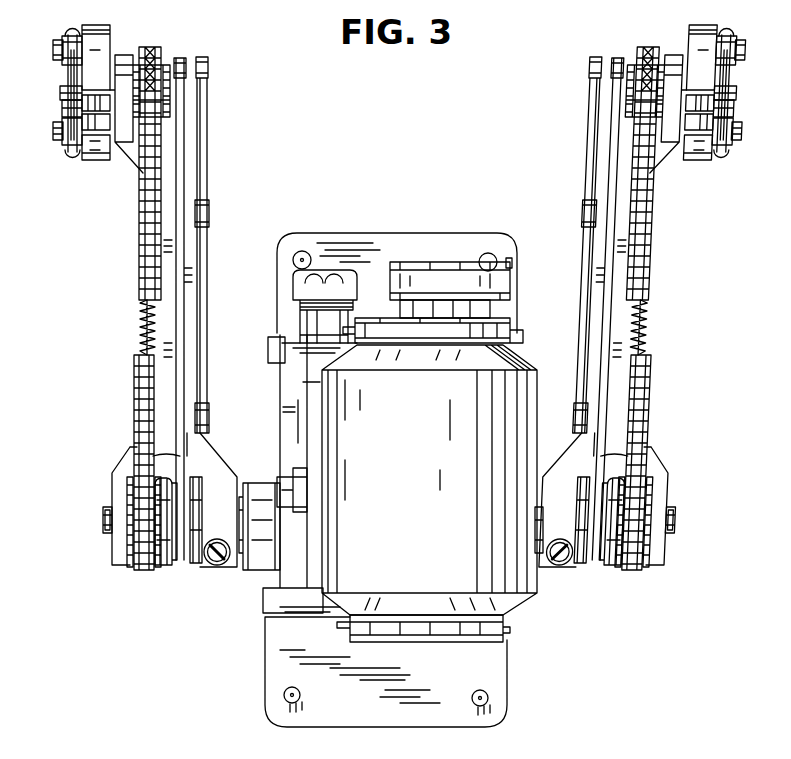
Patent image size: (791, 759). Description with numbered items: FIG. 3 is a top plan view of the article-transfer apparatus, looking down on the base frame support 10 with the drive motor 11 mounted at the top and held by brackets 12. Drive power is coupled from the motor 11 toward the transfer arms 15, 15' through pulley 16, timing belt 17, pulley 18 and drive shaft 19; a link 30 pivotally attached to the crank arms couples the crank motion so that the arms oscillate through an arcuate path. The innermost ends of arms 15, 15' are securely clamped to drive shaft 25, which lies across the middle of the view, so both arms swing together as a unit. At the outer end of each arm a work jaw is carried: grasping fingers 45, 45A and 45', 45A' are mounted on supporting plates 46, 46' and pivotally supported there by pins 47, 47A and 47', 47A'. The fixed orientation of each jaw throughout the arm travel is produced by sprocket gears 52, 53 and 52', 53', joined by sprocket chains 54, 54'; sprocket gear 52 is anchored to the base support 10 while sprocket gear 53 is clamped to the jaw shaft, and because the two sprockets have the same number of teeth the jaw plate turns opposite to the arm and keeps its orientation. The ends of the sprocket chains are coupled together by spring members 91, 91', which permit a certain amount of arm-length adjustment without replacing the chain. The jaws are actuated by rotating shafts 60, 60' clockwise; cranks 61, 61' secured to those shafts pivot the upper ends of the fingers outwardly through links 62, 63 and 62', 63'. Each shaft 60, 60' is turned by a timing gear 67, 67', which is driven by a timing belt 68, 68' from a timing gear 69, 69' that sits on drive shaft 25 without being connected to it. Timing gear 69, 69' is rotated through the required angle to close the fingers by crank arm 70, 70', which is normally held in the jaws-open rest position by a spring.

The base frame support 10 is at (503, 713).
The drive motor 11 is at (513, 400).
The brackets 12 is at (493, 331).
The transfer arm 15 is at (154, 500).
The transfer arm 15' is at (632, 500).
The pulley 16 is at (394, 262).
The timing belt 17 is at (427, 277).
The pulley 18 is at (510, 263).
The drive shaft 19 is at (493, 313).
The drive shaft 25 is at (103, 520).
The link 30 is at (315, 442).
The grasping finger 45 is at (78, 148).
The drive block 45' is at (707, 149).
The grasping finger 45A is at (101, 45).
The upper block 45A' is at (709, 50).
The supporting plate 46 is at (131, 124).
The supporting plate 46' is at (657, 126).
The pin 47 is at (47, 137).
The lower nut 47' is at (744, 155).
The pin 47A is at (44, 50).
The upper nut 47A' is at (753, 55).
The sprocket gear 52 is at (132, 542).
The sprocket 52' is at (643, 550).
The sprocket gear 53 is at (163, 160).
The chain 53' is at (642, 166).
The sprocket chain 54 is at (121, 418).
The sprocket chain 54' is at (661, 462).
The shaft 60 is at (47, 88).
The nut 60' is at (746, 111).
The crank 61 is at (47, 112).
The plate 61' is at (746, 100).
The link 62 is at (53, 164).
The bolt end 62' is at (736, 183).
The link 63 is at (56, 78).
The bolt 63' is at (740, 86).
The timing gear 67 is at (220, 238).
The arm 67' is at (571, 245).
The timing belt 68 is at (205, 309).
The timing belt 68' is at (588, 309).
The timing gear 69 is at (166, 547).
The disc 69' is at (591, 546).
The crank arm 70 is at (204, 542).
The disc 70' is at (565, 503).
The spring 91 is at (121, 328).
The spring member 91' is at (664, 327).